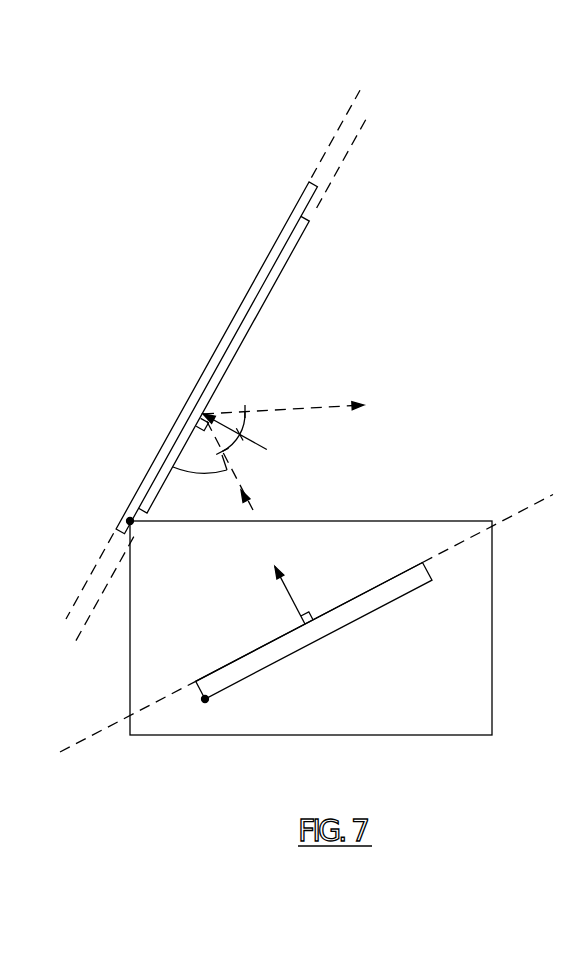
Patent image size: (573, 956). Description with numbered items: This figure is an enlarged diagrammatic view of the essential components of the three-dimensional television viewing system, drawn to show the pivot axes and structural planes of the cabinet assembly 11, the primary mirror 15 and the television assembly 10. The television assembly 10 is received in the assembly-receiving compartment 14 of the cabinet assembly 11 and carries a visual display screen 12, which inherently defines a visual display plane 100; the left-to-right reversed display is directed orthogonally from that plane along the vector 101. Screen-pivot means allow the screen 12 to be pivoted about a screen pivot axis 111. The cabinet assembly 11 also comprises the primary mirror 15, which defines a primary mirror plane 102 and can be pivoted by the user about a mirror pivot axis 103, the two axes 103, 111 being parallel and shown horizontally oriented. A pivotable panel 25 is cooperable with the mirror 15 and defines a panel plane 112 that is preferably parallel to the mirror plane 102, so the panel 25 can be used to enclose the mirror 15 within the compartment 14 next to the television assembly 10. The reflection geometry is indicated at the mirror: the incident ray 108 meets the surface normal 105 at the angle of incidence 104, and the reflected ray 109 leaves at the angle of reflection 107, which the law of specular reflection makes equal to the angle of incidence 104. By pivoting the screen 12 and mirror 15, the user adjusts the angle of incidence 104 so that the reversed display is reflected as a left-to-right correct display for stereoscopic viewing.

The television assembly 10 is at (322, 640).
The cabinet assembly 11 is at (493, 707).
The visual display screen 12 is at (280, 635).
The assembly-receiving compartment 14 is at (175, 565).
The primary mirror 15 is at (228, 365).
The pivotable panel 25 is at (210, 355).
The visual display plane 100 is at (532, 505).
The vector 101 is at (293, 590).
The primary mirror plane 102 is at (353, 145).
The mirror pivot axis 103 is at (128, 519).
The angle of incidence 104 is at (252, 466).
The surface normal 105 is at (266, 450).
The angle of reflection 107 is at (272, 423).
The incident ray 108 is at (173, 467).
The reflected ray 109 is at (340, 405).
The screen pivot axis 111 is at (203, 703).
The panel plane 112 is at (333, 138).